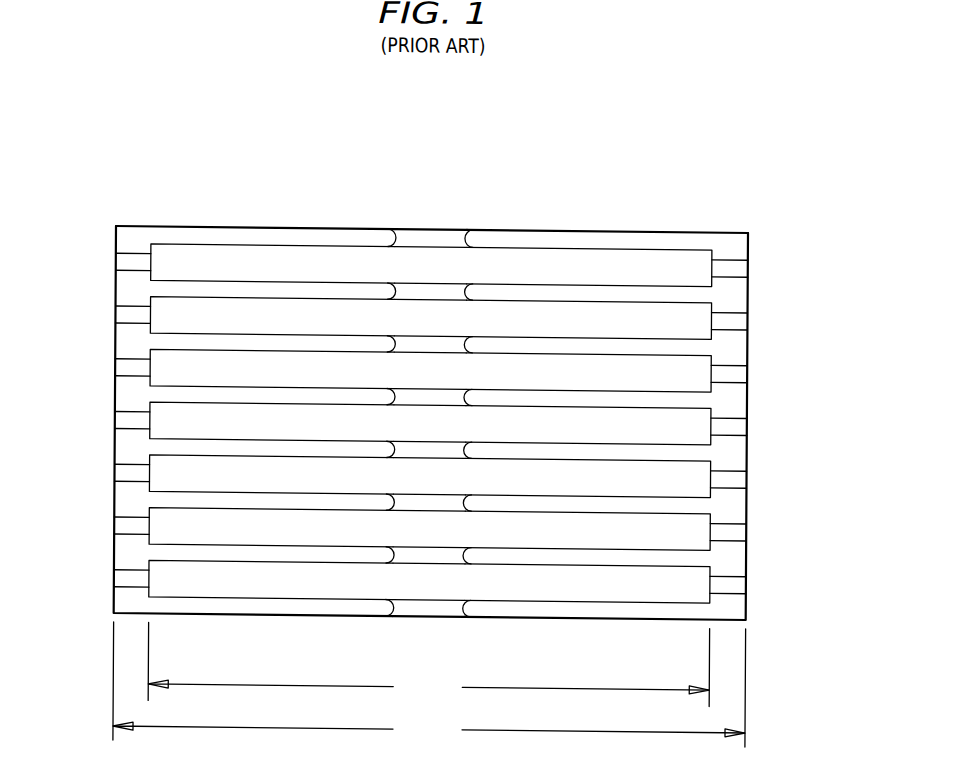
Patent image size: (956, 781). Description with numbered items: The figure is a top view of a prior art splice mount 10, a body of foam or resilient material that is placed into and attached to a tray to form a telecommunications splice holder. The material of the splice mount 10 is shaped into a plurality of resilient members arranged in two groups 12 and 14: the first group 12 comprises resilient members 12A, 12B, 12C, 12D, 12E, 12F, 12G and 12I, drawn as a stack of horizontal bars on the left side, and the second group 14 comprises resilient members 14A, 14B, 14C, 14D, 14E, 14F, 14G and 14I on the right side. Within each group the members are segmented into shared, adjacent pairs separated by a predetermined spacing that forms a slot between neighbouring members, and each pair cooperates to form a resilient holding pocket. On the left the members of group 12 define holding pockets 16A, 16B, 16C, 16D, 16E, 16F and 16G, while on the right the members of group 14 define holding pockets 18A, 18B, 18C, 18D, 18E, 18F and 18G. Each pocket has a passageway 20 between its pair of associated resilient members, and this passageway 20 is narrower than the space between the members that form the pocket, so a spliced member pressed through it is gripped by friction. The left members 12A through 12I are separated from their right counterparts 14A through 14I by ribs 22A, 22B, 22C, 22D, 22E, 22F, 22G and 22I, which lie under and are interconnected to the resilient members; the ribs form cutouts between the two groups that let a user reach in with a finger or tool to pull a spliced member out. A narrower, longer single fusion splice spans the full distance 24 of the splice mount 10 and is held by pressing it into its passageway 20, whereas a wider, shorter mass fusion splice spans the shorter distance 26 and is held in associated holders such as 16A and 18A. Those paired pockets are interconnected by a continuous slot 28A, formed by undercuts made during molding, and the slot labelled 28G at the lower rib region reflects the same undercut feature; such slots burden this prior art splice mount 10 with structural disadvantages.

The splice mount 10 is at (450, 122).
The first group of resilient members 12 is at (85, 172).
The second group of resilient members 14 is at (778, 190).
The resilient member 12A is at (255, 236).
The resilient member 12B is at (197, 288).
The resilient member 12C is at (197, 340).
The resilient member 12D is at (197, 393).
The resilient member 12E is at (197, 446).
The resilient member 12F is at (197, 499).
The resilient member 12G is at (197, 552).
The resilient member 12I is at (197, 604).
The resilient member 14A is at (586, 236).
The resilient member 14B is at (570, 282).
The resilient member 14C is at (570, 334).
The resilient member 14D is at (570, 387).
The resilient member 14E is at (570, 440).
The resilient member 14F is at (570, 493).
The resilient member 14G is at (570, 546).
The resilient member 14I is at (570, 598).
The resilient holding pocket 16A is at (173, 262).
The resilient holding pocket 16B is at (163, 316).
The resilient holding pocket 16C is at (163, 369).
The resilient holding pocket 16D is at (163, 422).
The resilient holding pocket 16E is at (163, 475).
The resilient holding pocket 16F is at (163, 528).
The resilient holding pocket 16G is at (163, 580).
The resilient holding pocket 18A is at (690, 260).
The resilient holding pocket 18B is at (700, 316).
The resilient holding pocket 18C is at (700, 369).
The resilient holding pocket 18D is at (700, 422).
The resilient holding pocket 18E is at (700, 475).
The resilient holding pocket 18F is at (700, 528).
The resilient holding pocket 18G is at (700, 580).
The passageway 20 is at (117, 311).
The rib 22A is at (405, 226).
The rib 22B is at (433, 280).
The rib 22C is at (433, 332).
The rib 22D is at (433, 385).
The rib 22E is at (433, 438).
The rib 22F is at (433, 491).
The rib 22G is at (433, 544).
The rib 22I is at (433, 596).
The distance 24 is at (429, 684).
The distance 26 is at (428, 664).
The continuous slot 28A is at (452, 250).
The slot / gap 28G is at (548, 575).